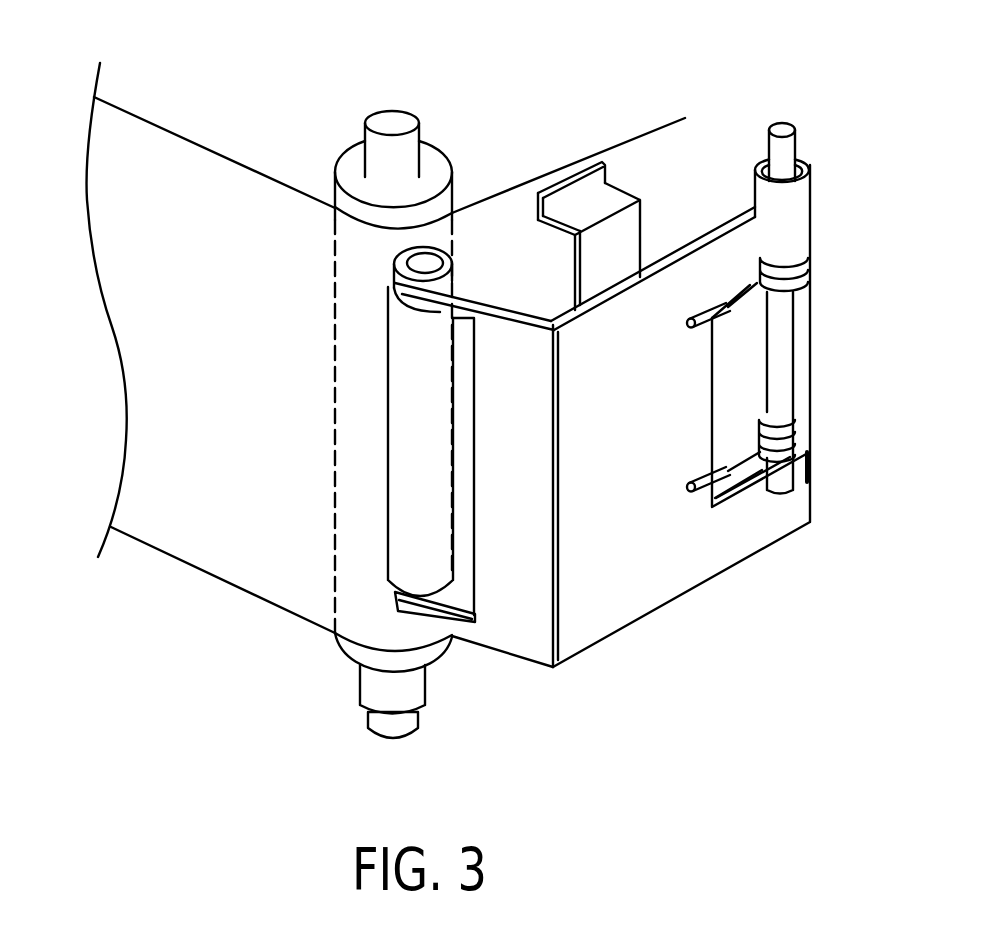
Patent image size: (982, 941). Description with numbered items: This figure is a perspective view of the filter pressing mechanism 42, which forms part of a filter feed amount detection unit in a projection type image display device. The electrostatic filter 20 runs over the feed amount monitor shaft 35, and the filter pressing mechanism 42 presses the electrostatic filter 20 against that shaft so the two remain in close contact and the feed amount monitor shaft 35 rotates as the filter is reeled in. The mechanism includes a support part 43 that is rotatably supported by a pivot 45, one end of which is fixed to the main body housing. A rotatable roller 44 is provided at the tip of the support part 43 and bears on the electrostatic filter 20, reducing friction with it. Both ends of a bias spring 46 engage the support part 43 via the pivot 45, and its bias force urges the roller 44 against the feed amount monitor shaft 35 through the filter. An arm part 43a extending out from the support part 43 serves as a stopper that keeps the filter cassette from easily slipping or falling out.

The electrostatic filter 20 is at (152, 335).
The feed amount monitor shaft 35 is at (392, 112).
The filter pressing mechanism 42 is at (510, 658).
The support part 43 is at (670, 587).
The arm part 43a is at (563, 178).
The roller 44 is at (403, 523).
The pivot 45 is at (785, 120).
The bias spring 46 is at (812, 267).